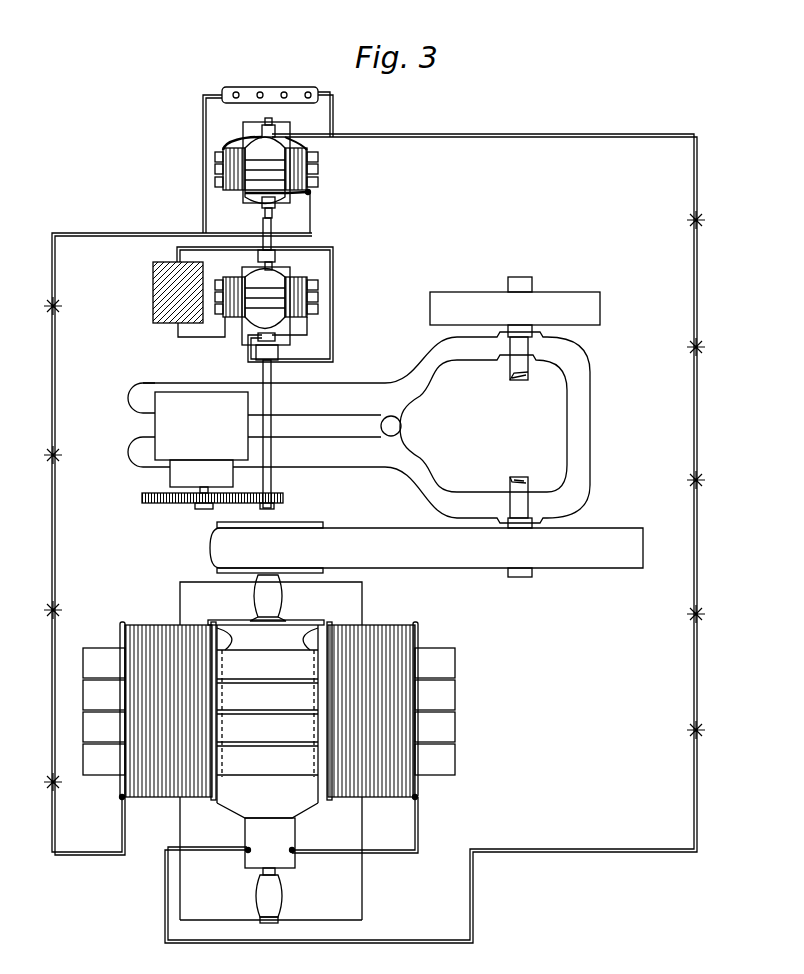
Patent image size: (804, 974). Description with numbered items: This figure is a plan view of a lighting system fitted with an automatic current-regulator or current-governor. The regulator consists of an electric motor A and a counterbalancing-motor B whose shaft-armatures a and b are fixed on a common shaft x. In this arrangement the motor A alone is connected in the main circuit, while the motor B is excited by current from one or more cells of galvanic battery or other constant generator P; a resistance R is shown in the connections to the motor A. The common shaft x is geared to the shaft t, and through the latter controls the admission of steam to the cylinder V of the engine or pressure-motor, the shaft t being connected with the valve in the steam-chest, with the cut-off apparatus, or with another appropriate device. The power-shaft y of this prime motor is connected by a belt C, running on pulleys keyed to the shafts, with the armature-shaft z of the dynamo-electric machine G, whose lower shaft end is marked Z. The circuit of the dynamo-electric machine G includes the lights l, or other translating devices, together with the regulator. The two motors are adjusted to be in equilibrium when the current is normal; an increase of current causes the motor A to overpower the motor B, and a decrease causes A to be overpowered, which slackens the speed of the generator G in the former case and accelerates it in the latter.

The rheostat / resistance R is at (270, 83).
The common shaft x is at (270, 312).
The electric motor A is at (266, 162).
The shaft-armature of motor A a is at (265, 170).
The counterbalancing-motor B is at (266, 306).
The shaft-armature of motor B b is at (265, 302).
The constant generator P is at (178, 292).
The cylinder V is at (264, 435).
The shaft t is at (200, 512).
The power-shaft y is at (519, 476).
The belt C is at (426, 547).
The armature-shaft z is at (280, 603).
The dynamo-electric machine G is at (269, 744).
The lower coupling Z is at (282, 878).
The lights l is at (370, 517).